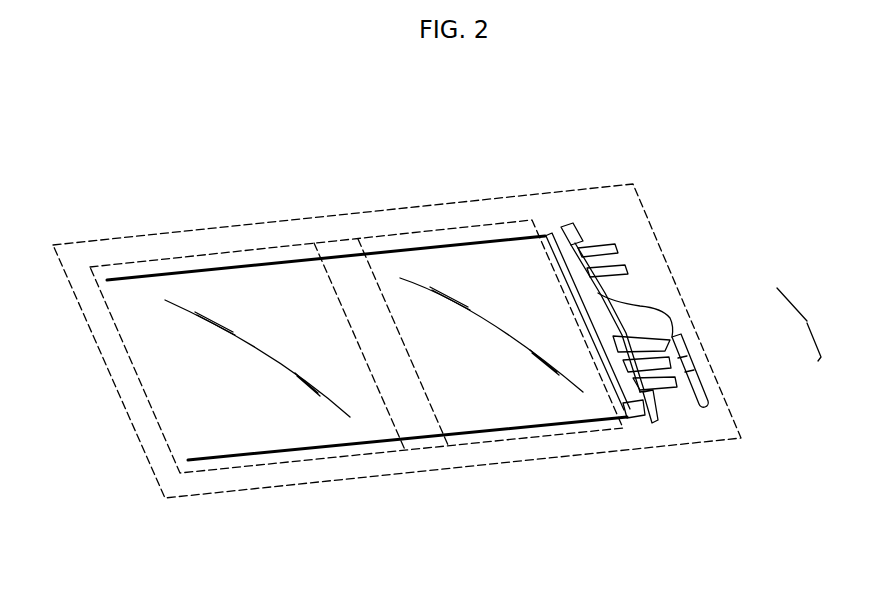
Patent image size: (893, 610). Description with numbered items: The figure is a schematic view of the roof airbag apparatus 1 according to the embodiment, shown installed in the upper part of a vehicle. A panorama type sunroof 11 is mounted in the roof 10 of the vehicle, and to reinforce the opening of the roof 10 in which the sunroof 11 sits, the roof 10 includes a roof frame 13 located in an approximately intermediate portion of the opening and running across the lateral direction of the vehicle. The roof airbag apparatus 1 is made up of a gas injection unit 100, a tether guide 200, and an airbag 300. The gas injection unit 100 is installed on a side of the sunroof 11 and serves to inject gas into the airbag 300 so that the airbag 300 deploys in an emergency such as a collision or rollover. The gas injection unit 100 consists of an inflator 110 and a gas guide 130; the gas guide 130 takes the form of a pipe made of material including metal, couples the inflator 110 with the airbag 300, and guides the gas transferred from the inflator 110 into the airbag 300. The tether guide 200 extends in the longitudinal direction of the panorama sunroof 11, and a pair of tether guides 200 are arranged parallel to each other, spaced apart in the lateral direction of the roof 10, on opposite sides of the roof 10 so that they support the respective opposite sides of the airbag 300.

The roof airbag apparatus 1 is at (634, 266).
The roof 10 is at (607, 210).
The sunroof 11 is at (435, 228).
The roof frame 13 is at (355, 287).
The gas injection unit 100 is at (812, 324).
The inflator 110 is at (700, 387).
The gas guide 130 is at (690, 350).
The tether guide 200 is at (255, 263).
The airbag 300 is at (595, 312).